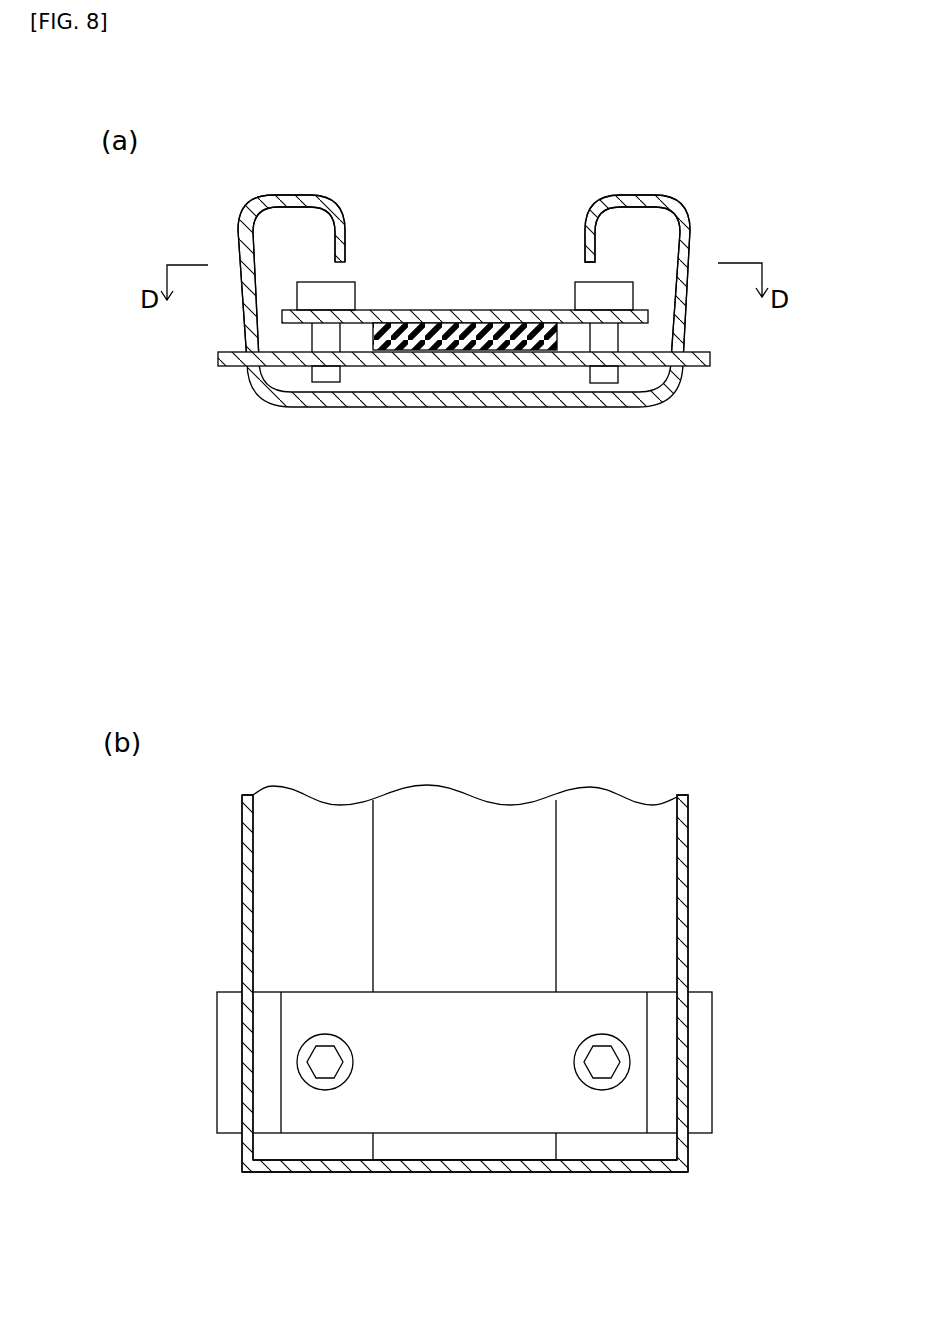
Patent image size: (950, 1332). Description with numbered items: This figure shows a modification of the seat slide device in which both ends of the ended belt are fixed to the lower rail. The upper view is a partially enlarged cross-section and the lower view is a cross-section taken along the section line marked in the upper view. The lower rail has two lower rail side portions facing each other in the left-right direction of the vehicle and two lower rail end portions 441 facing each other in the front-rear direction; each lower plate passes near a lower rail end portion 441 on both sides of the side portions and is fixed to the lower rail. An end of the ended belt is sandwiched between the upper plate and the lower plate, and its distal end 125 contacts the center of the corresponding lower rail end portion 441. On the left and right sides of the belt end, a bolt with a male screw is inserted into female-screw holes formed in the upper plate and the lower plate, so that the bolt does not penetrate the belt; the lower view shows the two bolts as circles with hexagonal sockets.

The lower rail end portion 441 is at (408, 1163).
The distal end 125 is at (463, 1163).